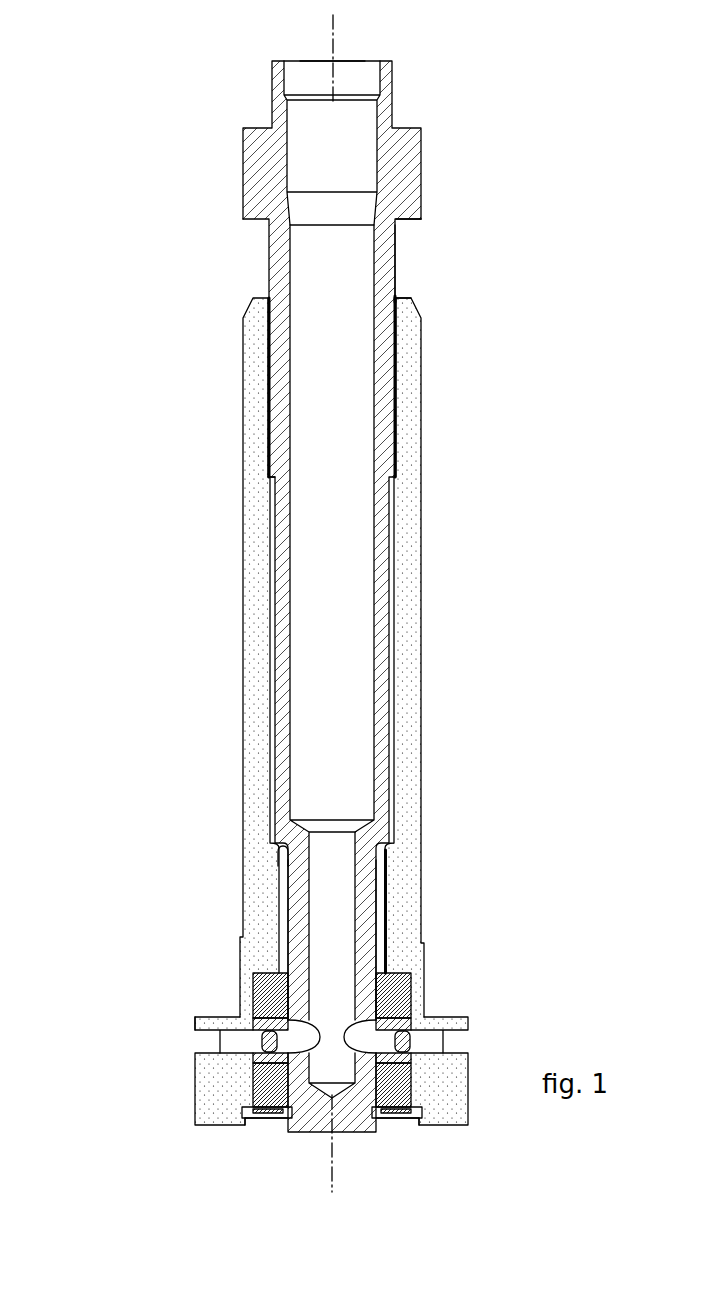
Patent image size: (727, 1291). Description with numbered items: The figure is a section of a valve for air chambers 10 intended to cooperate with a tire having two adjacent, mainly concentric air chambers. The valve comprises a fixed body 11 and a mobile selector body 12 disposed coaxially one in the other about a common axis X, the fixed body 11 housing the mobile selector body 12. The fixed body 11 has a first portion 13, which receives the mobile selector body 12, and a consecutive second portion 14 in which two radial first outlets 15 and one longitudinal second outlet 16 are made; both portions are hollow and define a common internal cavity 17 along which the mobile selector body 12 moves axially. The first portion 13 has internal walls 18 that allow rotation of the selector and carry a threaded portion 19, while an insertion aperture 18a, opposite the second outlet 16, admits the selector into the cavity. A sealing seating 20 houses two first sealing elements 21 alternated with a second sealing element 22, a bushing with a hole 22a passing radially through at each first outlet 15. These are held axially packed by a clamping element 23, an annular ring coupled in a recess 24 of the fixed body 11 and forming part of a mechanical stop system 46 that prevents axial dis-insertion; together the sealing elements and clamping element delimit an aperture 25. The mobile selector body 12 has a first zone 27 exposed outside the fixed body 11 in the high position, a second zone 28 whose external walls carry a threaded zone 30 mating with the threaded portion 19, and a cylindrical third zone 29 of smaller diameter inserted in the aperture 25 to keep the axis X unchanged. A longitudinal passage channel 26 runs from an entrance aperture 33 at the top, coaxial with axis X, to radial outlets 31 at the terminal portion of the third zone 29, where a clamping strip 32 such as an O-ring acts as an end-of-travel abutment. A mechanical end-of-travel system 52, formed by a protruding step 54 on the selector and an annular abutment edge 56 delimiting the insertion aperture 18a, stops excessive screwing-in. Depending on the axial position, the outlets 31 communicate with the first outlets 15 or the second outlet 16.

The valve for air chambers 10 is at (58, 120).
The fixed body 11 is at (204, 439).
The mobile selector body 12 is at (269, 243).
The first portion 13 is at (425, 418).
The second portion 14 is at (452, 1011).
The first outlet 15 is at (208, 1028).
The second outlet 16 is at (407, 1127).
The internal cavity 17 is at (282, 356).
The internal walls 18 is at (395, 352).
The insertion aperture 18a is at (390, 293).
The threaded portion 19 is at (386, 540).
The sealing seating 20 is at (397, 987).
The first sealing element 21 is at (272, 993).
The second sealing element 22 is at (262, 1025).
The hole 22a is at (402, 1032).
The clamping element 23 is at (397, 1116).
The recess 24 is at (243, 1098).
The aperture 25 is at (301, 992).
The passage channel 26 is at (303, 120).
The first zone 27 is at (424, 189).
The second zone 28 is at (396, 668).
The third zone 29 is at (387, 870).
The threaded zone 30 is at (390, 597).
The outlets 31 is at (298, 1052).
The clamping strip 32 is at (287, 1116).
The entrance aperture 33 is at (355, 62).
The mechanical stop system 46 is at (406, 1146).
The mechanical end-of-travel system 52 is at (450, 257).
The protruding step 54 is at (408, 219).
The annular abutment edge 56 is at (407, 290).
The axis X is at (333, 35).